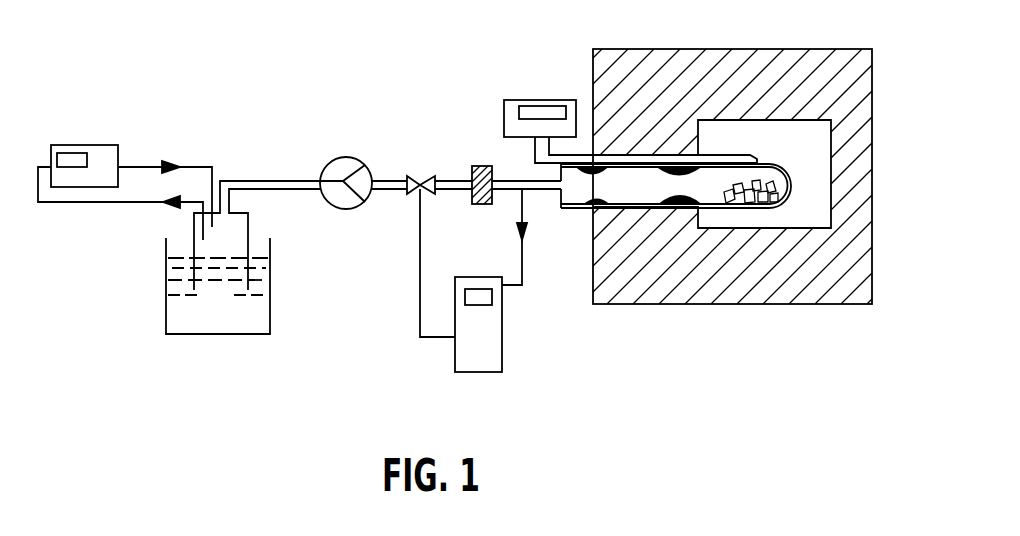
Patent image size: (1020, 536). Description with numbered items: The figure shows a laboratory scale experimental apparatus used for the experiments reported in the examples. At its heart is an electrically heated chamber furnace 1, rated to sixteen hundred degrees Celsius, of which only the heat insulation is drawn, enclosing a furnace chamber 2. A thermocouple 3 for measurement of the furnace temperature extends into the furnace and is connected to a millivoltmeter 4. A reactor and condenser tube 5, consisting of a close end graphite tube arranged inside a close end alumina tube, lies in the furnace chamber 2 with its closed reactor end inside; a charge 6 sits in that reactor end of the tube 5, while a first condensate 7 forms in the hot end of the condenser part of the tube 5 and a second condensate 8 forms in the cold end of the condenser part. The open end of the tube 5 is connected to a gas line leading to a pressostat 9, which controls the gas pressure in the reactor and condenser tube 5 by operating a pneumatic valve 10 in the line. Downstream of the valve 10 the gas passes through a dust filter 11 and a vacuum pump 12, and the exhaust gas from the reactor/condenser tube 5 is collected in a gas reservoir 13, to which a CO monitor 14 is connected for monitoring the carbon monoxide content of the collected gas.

The chamber furnace 1 is at (733, 290).
The furnace chamber 2 is at (763, 125).
The thermocouple 3 is at (732, 156).
The millivoltmeter 4 is at (553, 112).
The reactor and condenser tube 5 is at (777, 206).
The charge 6 is at (777, 192).
The first condensate 7 is at (670, 176).
The second condensate 8 is at (583, 171).
The pressostat 9 is at (497, 335).
The pneumatic valve 10 is at (415, 180).
The dust filter 11 is at (483, 167).
The vacuum pump 12 is at (335, 170).
The gas reservoir 13 is at (230, 246).
The CO monitor 14 is at (109, 155).